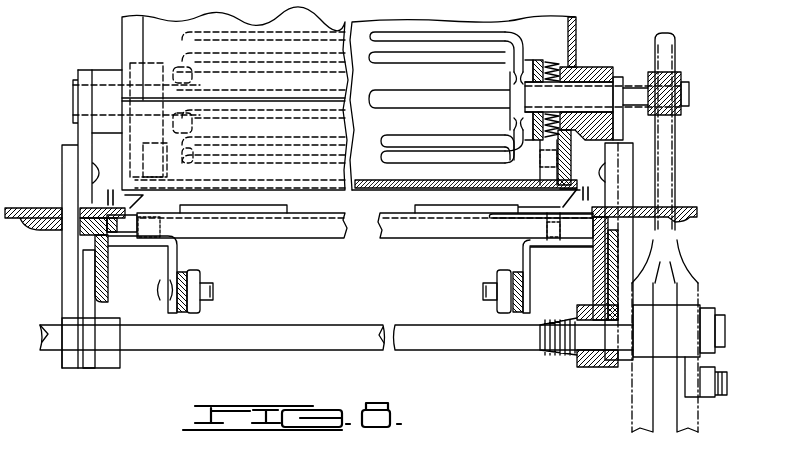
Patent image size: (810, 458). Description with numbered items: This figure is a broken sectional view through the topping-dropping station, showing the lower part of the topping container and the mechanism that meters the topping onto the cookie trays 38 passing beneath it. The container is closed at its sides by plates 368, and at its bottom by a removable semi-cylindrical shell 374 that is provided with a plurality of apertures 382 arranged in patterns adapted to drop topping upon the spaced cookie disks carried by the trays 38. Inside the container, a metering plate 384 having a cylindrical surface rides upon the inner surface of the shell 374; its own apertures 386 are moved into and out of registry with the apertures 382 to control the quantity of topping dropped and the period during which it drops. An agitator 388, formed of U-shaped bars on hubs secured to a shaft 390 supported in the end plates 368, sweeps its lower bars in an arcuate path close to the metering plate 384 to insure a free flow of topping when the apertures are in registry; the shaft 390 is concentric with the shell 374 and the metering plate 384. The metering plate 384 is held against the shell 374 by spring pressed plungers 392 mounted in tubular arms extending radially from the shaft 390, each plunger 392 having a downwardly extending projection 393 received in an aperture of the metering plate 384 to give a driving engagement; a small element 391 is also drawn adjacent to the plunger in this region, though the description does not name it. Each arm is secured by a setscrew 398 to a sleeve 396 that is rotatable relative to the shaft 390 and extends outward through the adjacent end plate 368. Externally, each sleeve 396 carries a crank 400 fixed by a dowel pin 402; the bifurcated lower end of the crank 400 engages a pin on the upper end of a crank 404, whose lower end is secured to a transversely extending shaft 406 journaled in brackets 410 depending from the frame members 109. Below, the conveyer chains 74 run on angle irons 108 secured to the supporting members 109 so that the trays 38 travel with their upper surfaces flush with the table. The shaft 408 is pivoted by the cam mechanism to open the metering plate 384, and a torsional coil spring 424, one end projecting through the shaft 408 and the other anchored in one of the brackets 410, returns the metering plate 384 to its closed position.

The end plate 368 is at (576, 20).
The semi-cylindrical shell 374 is at (395, 190).
The apertures 382 is at (490, 190).
The metering plate 384 is at (393, 180).
The apertures 386 is at (465, 180).
The agitator 388 is at (435, 33).
The shaft 390 is at (413, 93).
The nut 391 is at (528, 165).
The spring pressed plunger 392 is at (560, 162).
The projection 393 is at (568, 192).
The sleeve 396 is at (578, 85).
The setscrew 398 is at (545, 60).
The crank 400 is at (617, 52).
The dowel pin 402 is at (612, 80).
The crank 404 is at (637, 172).
The transversely extending shaft 406 is at (633, 200).
The shaft 408 is at (475, 345).
The bracket 410 is at (590, 305).
The torsional coil spring 424 is at (550, 360).
The tray 38 is at (311, 240).
The angle iron 108 is at (593, 262).
The supporting member 109 is at (608, 266).
The chain 74 is at (105, 232).